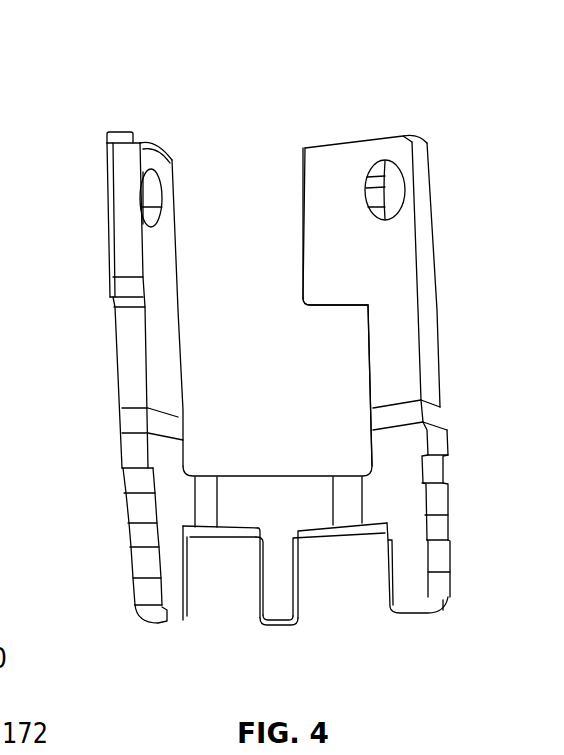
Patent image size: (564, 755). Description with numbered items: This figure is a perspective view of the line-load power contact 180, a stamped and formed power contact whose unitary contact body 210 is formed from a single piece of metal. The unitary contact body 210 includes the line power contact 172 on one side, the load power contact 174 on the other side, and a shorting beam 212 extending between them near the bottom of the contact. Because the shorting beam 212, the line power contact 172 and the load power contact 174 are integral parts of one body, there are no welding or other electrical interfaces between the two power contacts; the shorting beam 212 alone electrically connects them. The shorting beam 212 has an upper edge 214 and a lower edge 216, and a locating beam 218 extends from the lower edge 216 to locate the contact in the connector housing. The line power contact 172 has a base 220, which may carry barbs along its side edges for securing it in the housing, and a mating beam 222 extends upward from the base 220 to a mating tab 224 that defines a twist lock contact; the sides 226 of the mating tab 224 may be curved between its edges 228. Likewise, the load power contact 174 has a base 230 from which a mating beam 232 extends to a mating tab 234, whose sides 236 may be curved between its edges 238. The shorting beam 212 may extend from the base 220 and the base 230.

The line-load power contact 180 is at (216, 54).
The load power contact 174 is at (98, 131).
The line power contact 172 is at (406, 130).
The edges 238 is at (173, 188).
The mating tab 234 is at (130, 218).
The sides 236 is at (125, 283).
The mating beam 232 is at (133, 375).
The base 230 is at (145, 528).
The mating tab 224 is at (312, 182).
The edges 228 is at (300, 226).
The sides 226 is at (335, 255).
The mating beam 222 is at (395, 348).
The unitary contact body 210 is at (452, 500).
The base 220 is at (407, 565).
The shorting beam 212 is at (233, 502).
The upper edge 214 is at (297, 475).
The lower edge 216 is at (308, 535).
The locating beam 218 is at (283, 612).